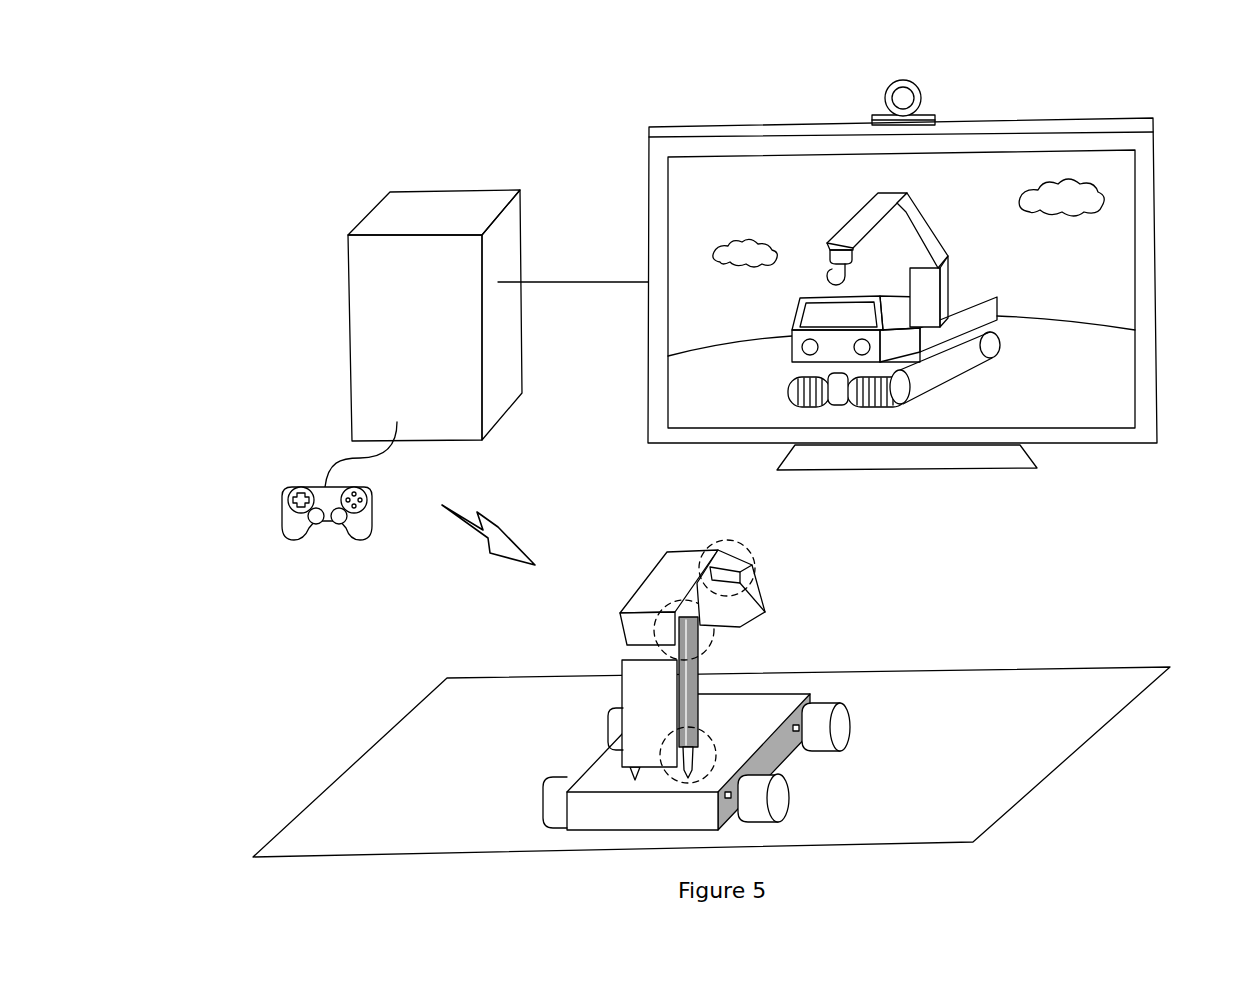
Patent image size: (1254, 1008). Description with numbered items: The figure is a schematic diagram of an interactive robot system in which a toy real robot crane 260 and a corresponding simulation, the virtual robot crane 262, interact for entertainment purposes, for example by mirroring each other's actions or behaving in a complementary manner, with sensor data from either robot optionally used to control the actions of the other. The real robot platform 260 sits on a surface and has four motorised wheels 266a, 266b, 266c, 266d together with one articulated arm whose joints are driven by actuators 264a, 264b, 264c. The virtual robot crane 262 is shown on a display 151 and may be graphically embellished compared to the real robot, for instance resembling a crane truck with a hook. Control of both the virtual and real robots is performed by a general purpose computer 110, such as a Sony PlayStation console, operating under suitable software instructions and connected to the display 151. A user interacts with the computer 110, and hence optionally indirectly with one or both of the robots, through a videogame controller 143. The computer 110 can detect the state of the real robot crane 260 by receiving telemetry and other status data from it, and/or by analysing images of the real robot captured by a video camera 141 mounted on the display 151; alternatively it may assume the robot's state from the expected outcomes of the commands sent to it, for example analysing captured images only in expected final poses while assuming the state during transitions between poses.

The general purpose computer 110 is at (348, 372).
The video camera 141 is at (906, 81).
The videogame controller 143 is at (280, 527).
The display 151 is at (1157, 272).
The real robot crane 260 is at (622, 672).
The virtual robot crane 262 is at (848, 220).
The actuator 264a is at (743, 543).
The actuator 264b is at (715, 647).
The actuator 264c is at (793, 770).
The motorised wheel 266a is at (847, 703).
The motorised wheel 266b is at (787, 813).
The motorised wheel 266c is at (542, 803).
The motorised wheel 266d is at (607, 717).